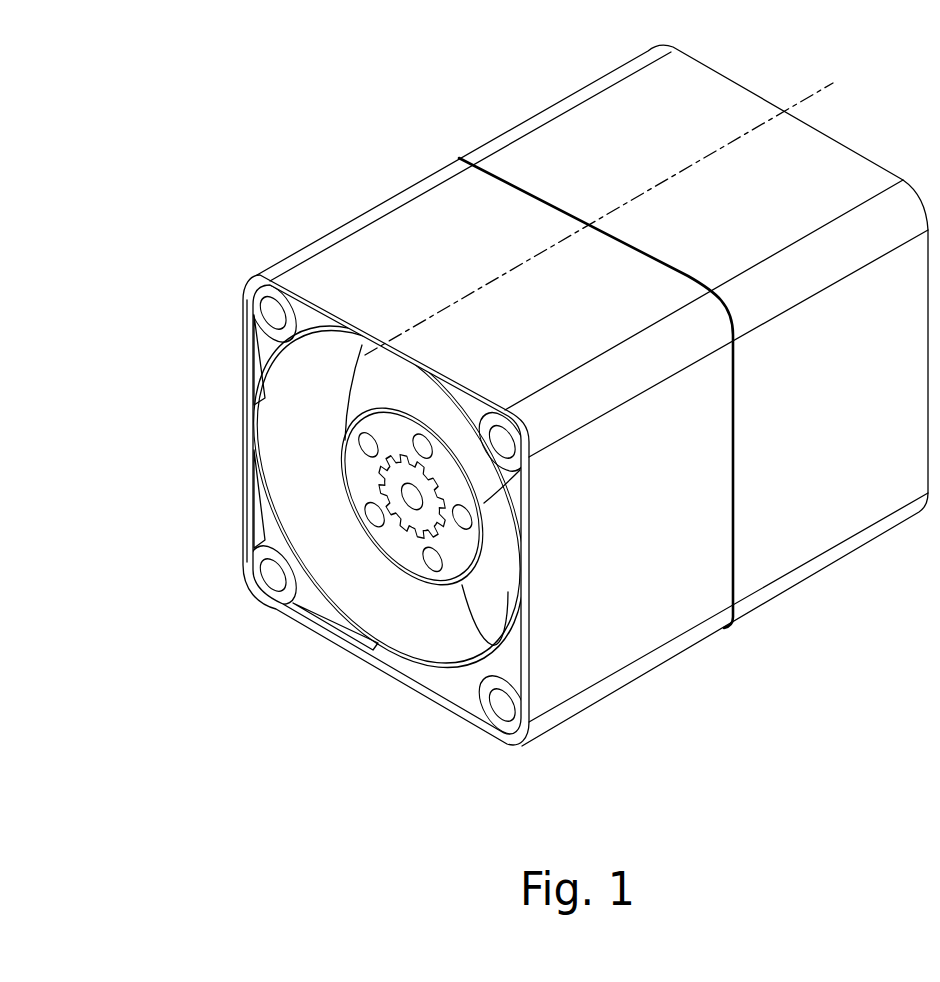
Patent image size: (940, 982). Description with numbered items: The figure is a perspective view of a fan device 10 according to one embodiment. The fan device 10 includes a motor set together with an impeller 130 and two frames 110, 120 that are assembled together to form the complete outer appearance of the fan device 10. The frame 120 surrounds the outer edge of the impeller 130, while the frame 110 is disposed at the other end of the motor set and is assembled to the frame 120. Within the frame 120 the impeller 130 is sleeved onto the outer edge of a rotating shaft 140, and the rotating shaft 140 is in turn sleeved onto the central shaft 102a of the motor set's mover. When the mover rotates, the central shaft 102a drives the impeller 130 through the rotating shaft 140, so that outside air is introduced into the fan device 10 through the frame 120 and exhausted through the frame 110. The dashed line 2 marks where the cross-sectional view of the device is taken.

The fan device 10 is at (172, 44).
The frame 110 is at (537, 60).
The frame 120 is at (312, 181).
The impeller 130 is at (373, 395).
The rotating shaft 140 is at (357, 520).
The central shaft 102a is at (397, 495).
The line 2- 2 is at (858, 95).